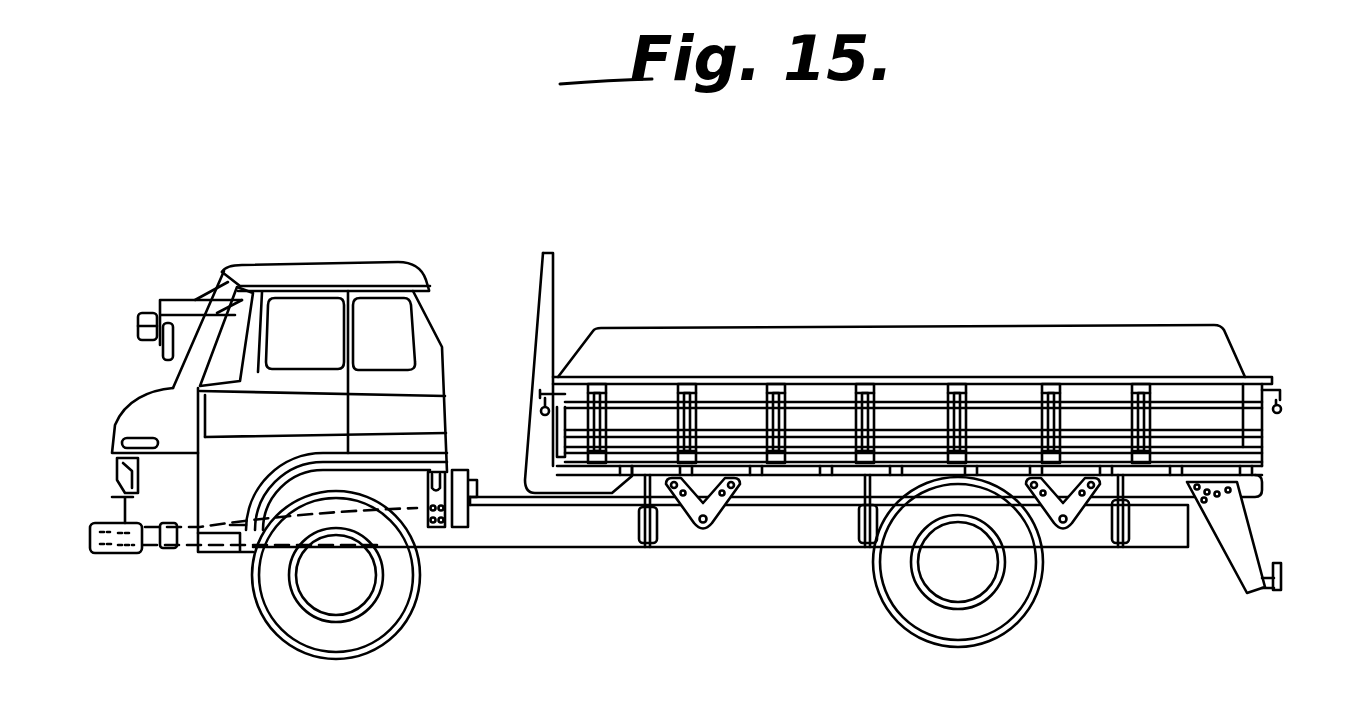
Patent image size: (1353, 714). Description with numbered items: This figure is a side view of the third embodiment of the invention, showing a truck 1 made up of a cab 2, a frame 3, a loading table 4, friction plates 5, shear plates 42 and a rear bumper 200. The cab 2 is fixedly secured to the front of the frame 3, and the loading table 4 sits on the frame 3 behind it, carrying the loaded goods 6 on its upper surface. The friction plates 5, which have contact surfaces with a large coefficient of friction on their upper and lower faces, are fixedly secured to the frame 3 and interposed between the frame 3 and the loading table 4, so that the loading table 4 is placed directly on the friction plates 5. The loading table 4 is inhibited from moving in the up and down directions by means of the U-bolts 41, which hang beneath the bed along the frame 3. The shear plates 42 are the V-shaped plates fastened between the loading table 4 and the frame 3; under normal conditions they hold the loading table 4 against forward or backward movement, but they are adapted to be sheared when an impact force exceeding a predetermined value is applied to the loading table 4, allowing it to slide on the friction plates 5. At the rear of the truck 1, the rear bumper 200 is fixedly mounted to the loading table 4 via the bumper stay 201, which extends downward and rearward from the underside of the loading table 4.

The truck 1 is at (750, 215).
The cab 2 is at (323, 265).
The frame 3 is at (812, 537).
The loading table 4 is at (814, 388).
The friction plates 5 is at (587, 483).
The goods 6 is at (977, 337).
The U-bolts 41 is at (642, 537).
The shear plates 42 is at (725, 525).
The rear bumper 200 is at (1300, 545).
The bumper stay 201 is at (1226, 562).